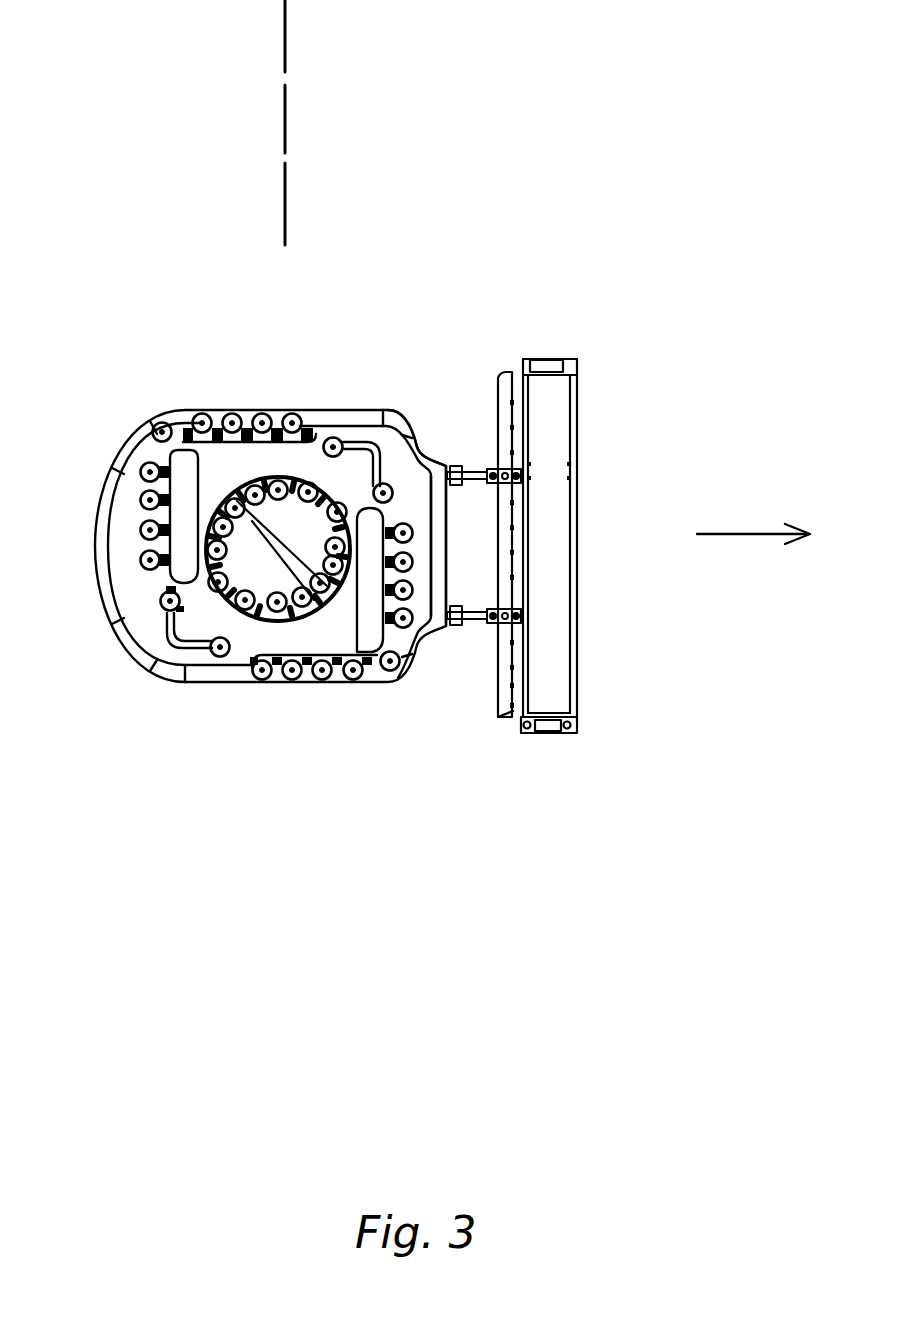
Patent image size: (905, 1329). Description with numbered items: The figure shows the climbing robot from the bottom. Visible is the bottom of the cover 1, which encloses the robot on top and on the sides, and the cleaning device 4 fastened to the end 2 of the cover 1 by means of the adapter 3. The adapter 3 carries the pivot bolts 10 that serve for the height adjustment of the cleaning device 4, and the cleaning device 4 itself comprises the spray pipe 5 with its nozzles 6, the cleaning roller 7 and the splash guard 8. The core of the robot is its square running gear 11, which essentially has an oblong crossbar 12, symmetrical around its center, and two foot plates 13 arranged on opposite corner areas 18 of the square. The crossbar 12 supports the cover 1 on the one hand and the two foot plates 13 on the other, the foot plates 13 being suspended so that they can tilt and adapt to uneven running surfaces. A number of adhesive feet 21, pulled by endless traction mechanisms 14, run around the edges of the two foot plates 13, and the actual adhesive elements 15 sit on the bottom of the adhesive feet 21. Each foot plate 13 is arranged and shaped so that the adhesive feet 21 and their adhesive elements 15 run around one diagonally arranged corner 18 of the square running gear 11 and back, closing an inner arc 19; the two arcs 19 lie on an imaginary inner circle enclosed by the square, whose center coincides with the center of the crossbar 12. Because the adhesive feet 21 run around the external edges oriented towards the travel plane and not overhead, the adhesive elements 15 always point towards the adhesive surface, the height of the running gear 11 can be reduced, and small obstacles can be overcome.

The cover 1 is at (153, 682).
The end of the cover 2 is at (440, 498).
The adapter 3 is at (446, 531).
The cleaning device 4 is at (578, 792).
The spray pipe 5 is at (500, 380).
The nozzles 6 is at (500, 716).
The cleaning roller 7 is at (552, 418).
The splash guard 8 is at (578, 528).
The pivot bolts 10 is at (472, 450).
The square running gear 11 is at (265, 750).
The crossbar 12 is at (272, 545).
The foot plates 13 is at (207, 483).
The endless traction mechanisms 14 is at (166, 582).
The adhesive elements 15 is at (262, 418).
The corner areas 18 is at (135, 420).
The inner arc 19 is at (232, 477).
The adhesive feet 21 is at (317, 394).